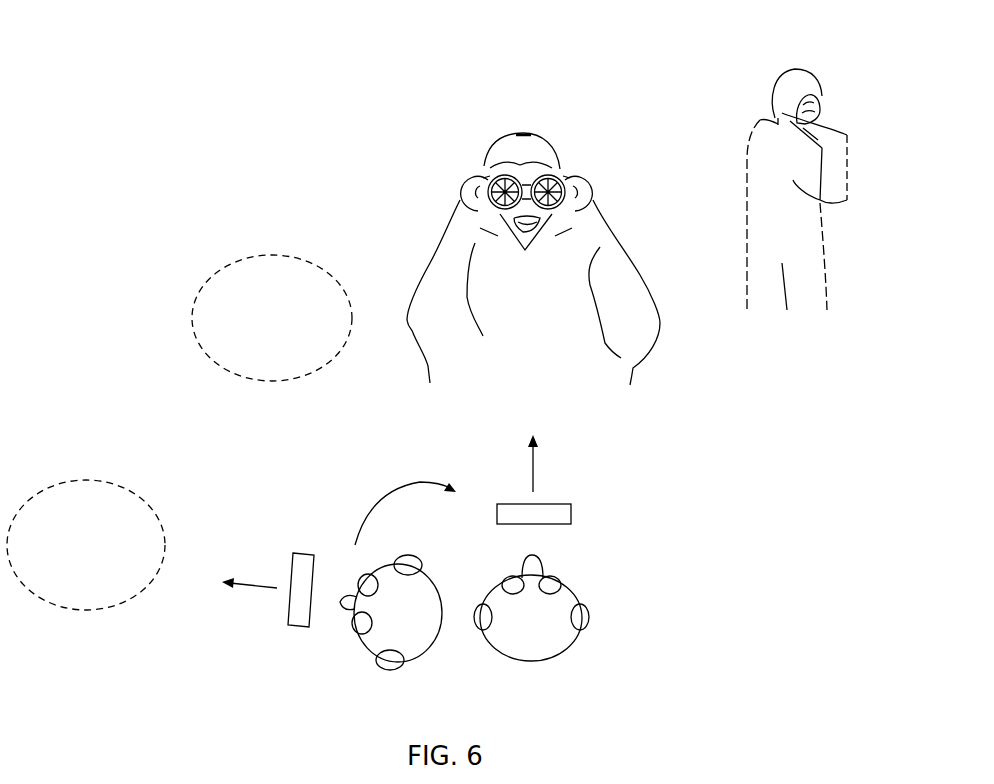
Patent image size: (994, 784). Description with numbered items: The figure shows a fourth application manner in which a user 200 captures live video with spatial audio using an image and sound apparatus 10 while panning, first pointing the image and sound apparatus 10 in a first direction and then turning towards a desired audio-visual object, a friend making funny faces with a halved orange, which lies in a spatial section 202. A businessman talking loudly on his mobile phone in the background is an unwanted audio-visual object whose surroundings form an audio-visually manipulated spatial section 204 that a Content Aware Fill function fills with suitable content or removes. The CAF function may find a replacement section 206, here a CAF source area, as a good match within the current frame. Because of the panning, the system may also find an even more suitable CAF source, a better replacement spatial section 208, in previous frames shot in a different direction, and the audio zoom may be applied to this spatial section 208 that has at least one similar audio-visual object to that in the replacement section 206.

The image and sound apparatus 10 is at (303, 552).
The user 200 is at (410, 626).
The spatial section 202 is at (466, 131).
The audio-visually manipulated spatial section 204 is at (831, 55).
The replacement section 206 is at (265, 255).
The replacement spatial section 208 is at (80, 481).